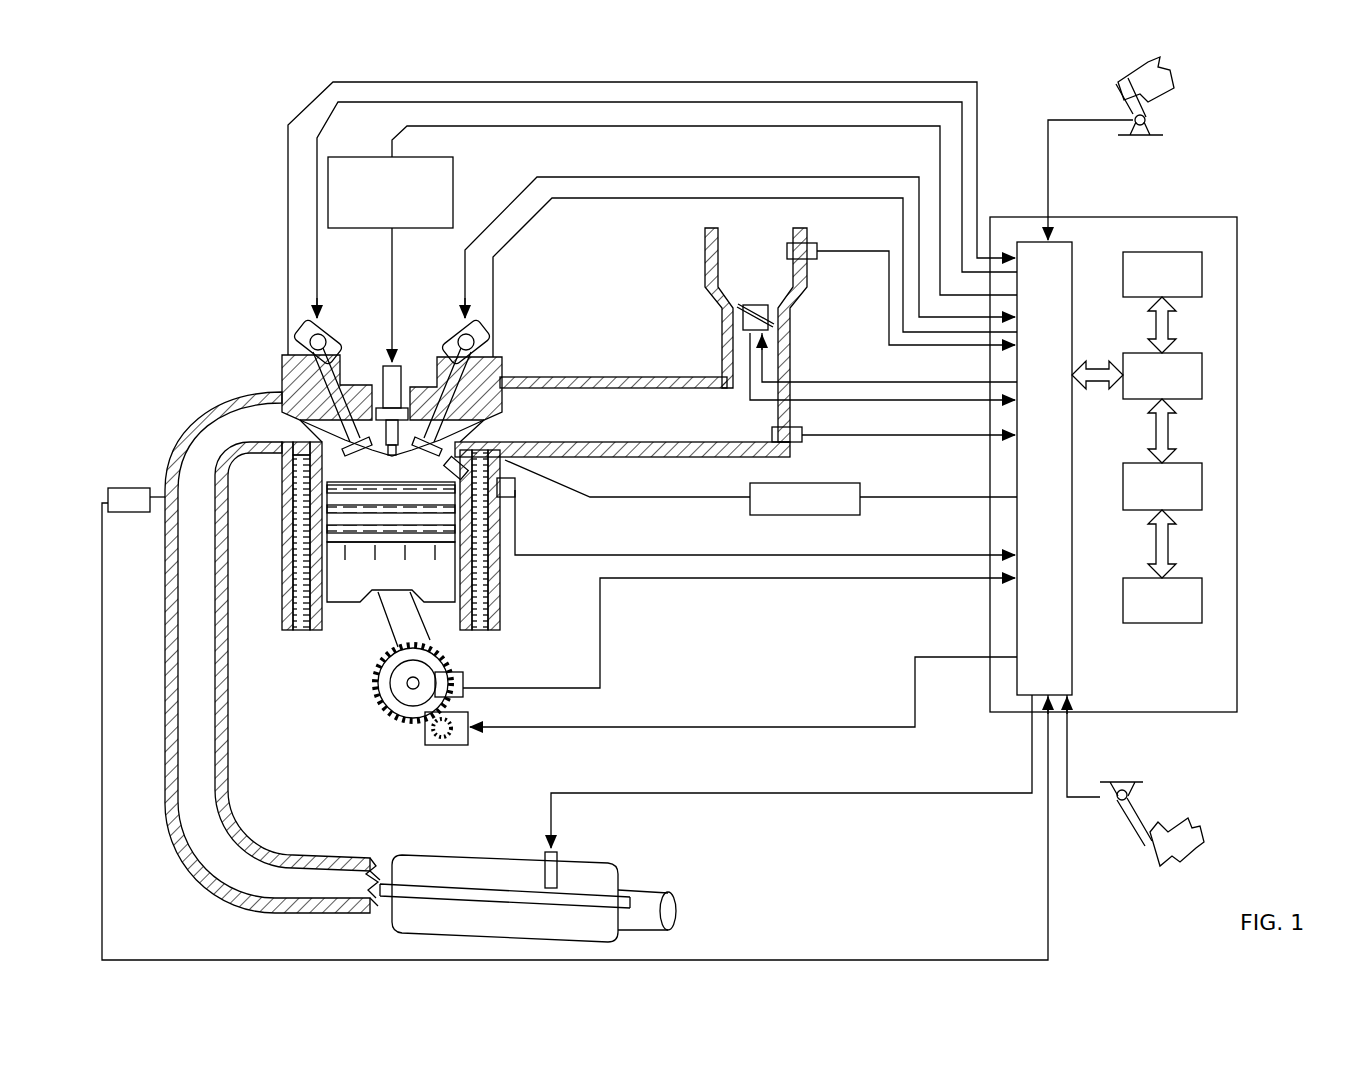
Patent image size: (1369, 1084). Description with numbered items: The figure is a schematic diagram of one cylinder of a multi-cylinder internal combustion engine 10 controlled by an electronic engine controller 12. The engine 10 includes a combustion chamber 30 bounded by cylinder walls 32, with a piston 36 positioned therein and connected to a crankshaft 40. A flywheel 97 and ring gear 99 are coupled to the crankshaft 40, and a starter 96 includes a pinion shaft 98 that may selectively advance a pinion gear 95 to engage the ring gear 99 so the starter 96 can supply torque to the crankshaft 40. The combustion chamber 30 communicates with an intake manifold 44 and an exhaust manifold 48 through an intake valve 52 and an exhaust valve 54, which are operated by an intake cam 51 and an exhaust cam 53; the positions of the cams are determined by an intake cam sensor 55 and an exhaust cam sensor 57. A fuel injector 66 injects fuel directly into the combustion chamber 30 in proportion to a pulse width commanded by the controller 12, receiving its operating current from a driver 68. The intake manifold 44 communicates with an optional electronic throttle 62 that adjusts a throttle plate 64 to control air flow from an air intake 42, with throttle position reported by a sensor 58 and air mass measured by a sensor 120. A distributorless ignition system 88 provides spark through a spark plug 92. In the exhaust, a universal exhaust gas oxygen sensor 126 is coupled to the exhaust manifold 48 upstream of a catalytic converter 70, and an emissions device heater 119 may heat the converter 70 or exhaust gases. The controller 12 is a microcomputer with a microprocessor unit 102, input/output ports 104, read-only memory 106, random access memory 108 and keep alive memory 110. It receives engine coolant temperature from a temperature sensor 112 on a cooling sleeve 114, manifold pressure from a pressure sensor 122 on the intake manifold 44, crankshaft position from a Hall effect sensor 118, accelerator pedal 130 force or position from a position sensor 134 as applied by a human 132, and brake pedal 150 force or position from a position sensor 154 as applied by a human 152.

The internal combustion engine 10 is at (210, 305).
The electronic engine controller 12 is at (1232, 218).
The combustion chamber 30 is at (284, 586).
The cylinder walls 32 is at (330, 613).
The piston 36 is at (370, 573).
The crankshaft 40 is at (400, 703).
The air intake 42 is at (739, 281).
The intake manifold 44 is at (675, 431).
The exhaust manifold 48 is at (232, 438).
The intake cam 51 is at (447, 312).
The intake valve 52 is at (470, 430).
The exhaust cam 53 is at (333, 310).
The exhaust valve 54 is at (308, 412).
The intake cam sensor 55 is at (477, 347).
The exhaust cam sensor 57 is at (307, 347).
The throttle position sensor 58 is at (733, 335).
The electronic throttle 62 is at (778, 318).
The throttle plate 64 is at (725, 313).
The fuel injector 66 is at (515, 465).
The driver 68 is at (772, 515).
The catalytic converter 70 is at (405, 855).
The distributorless ignition system 88 is at (340, 157).
The spark plug 92 is at (393, 365).
The pinion gear 95 is at (456, 746).
The starter 96 is at (462, 744).
The flywheel 97 is at (380, 694).
The pinion shaft 98 is at (438, 742).
The ring gear 99 is at (407, 727).
The microprocessor unit 102 is at (1205, 375).
The input/output ports 104 is at (1076, 250).
The read-only memory 106 is at (1205, 268).
The random access memory 108 is at (1205, 482).
The keep alive memory 110 is at (1205, 593).
The temperature sensor 112 is at (517, 498).
The cooling sleeve 114 is at (490, 583).
The Hall effect sensor 118 is at (465, 674).
The emissions device heater 119 is at (557, 852).
The air mass sensor 120 is at (814, 244).
The pressure sensor 122 is at (800, 444).
The Universal Exhaust Gas Oxygen sensor 126 is at (108, 495).
The accelerator pedal 130 is at (1115, 92).
The human 132 is at (1172, 80).
The position sensor 134 is at (1150, 122).
The brake pedal 150 is at (1148, 845).
The human 152 is at (1188, 820).
The position sensor 154 is at (1106, 792).